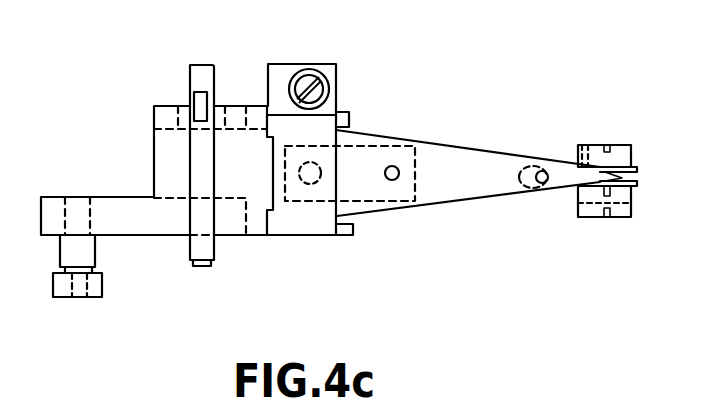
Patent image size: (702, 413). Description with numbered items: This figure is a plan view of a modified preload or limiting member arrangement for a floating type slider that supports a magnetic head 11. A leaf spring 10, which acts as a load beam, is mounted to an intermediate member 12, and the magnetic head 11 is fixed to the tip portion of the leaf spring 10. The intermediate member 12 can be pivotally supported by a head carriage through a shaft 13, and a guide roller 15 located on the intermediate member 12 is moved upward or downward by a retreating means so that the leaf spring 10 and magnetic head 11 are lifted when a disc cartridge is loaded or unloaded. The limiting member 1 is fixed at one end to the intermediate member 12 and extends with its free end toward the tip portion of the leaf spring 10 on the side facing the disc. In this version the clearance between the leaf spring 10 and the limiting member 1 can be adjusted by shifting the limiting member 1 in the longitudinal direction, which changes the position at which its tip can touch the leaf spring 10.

The limiting member 1 is at (420, 199).
The leaf spring 10 is at (488, 153).
The magnetic head 11 is at (614, 143).
The intermediate member 12 is at (330, 70).
The shaft 13 is at (213, 67).
The guide roller 15 is at (82, 297).